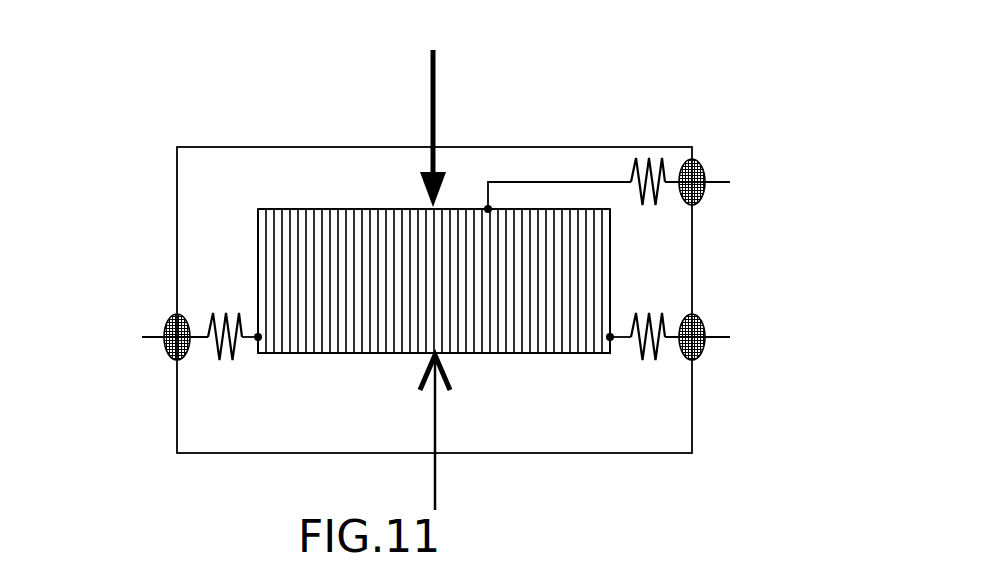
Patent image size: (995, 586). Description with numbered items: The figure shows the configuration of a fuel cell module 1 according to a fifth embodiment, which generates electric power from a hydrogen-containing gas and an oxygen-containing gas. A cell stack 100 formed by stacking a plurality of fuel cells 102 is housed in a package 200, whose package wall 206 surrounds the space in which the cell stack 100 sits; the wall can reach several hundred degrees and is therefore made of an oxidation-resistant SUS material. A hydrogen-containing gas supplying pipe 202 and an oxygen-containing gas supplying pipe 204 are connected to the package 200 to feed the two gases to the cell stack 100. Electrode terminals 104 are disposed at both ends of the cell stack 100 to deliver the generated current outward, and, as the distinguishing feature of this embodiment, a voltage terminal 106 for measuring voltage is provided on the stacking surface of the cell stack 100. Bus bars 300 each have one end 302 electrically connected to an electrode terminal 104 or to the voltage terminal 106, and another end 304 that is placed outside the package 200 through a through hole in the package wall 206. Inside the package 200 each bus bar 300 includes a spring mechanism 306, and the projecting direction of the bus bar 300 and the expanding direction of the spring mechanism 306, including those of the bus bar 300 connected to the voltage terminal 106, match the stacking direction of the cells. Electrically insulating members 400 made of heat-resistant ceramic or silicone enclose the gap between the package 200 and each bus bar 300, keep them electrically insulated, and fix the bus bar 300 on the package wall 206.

The fuel cell module 1 is at (602, 75).
The cell stack 100 is at (320, 205).
The fuel cell 102 is at (348, 355).
The electrode terminal 104 is at (257, 333).
The voltage terminal 106 is at (488, 207).
The package 200 is at (349, 132).
The hydrogen-containing gas supplying pipe 202 is at (437, 88).
The oxygen-containing gas supplying pipe 204 is at (437, 486).
The package wall 206 is at (278, 147).
The bus bar 300 is at (535, 170).
The one end 302 is at (492, 207).
The other end 304 is at (728, 182).
The spring mechanism 306 is at (657, 160).
The electrically insulating member 400 is at (700, 170).